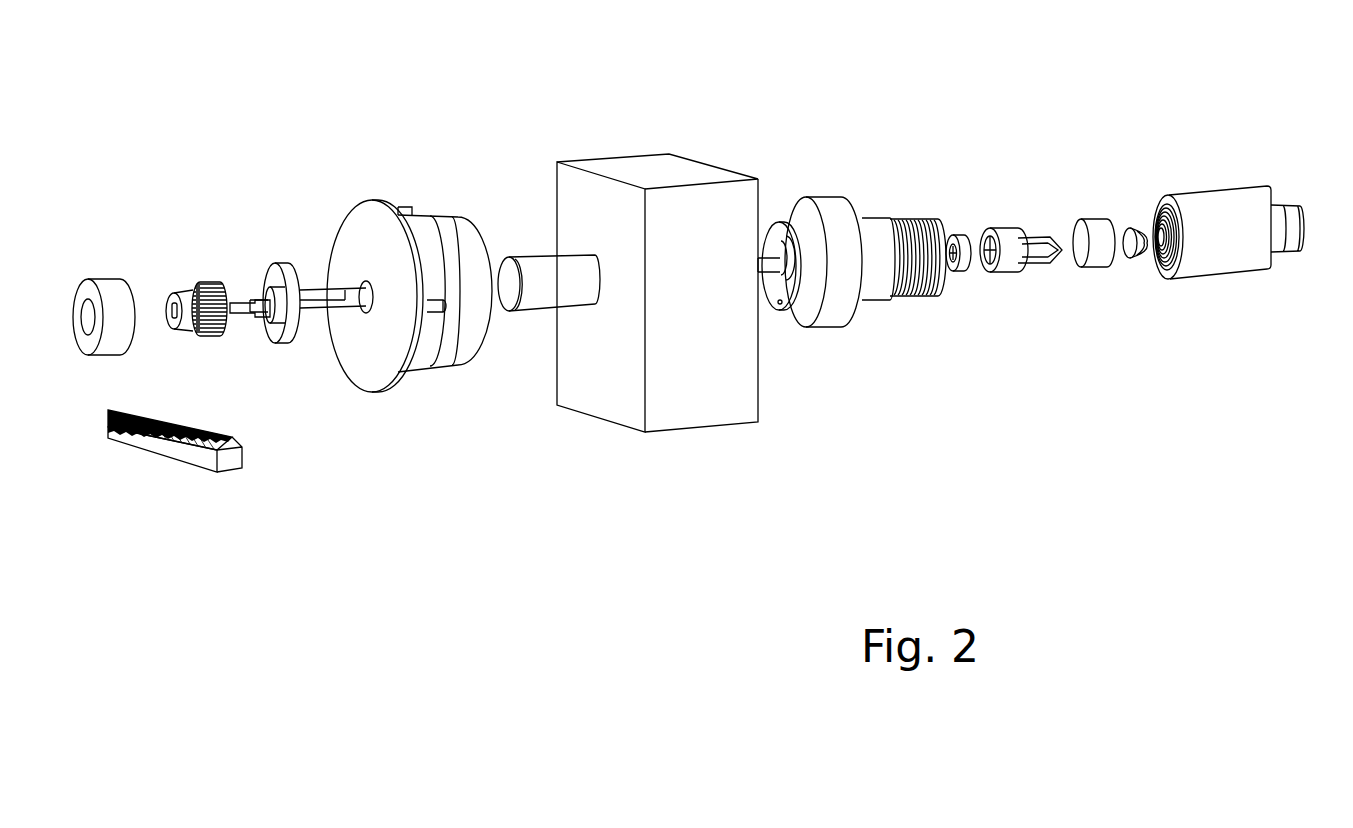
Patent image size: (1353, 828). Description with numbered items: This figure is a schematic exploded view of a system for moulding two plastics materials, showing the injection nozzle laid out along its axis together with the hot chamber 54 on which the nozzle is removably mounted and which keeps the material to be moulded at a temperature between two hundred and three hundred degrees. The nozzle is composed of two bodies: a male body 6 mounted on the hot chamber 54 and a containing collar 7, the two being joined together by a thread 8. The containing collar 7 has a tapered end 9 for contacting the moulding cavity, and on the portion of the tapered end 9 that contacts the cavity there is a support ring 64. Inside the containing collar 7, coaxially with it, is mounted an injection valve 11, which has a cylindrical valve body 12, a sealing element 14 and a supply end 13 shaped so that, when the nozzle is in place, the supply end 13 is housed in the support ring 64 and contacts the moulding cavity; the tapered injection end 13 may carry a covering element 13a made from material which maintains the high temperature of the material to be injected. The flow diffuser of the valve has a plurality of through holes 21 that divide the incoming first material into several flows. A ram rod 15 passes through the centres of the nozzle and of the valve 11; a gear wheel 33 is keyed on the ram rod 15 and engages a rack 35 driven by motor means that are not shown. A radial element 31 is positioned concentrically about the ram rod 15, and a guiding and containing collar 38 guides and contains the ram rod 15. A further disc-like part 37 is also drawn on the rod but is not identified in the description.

The male body 6 is at (868, 218).
The containing collar 7 is at (1243, 245).
The thread 8 is at (910, 297).
The tapered end 9 is at (1217, 208).
The injection valve 11 is at (1133, 268).
The cylindrical valve body 12 is at (1022, 228).
The supply end 13 is at (1057, 228).
The covering element 13a is at (1128, 223).
The sealing element 14 is at (1099, 217).
The ram rod 15 is at (765, 290).
The through holes 21 is at (950, 233).
The radial element 31 is at (430, 217).
The gear wheel 33 is at (212, 272).
The rack 35 is at (236, 438).
The drive wheel 37 is at (286, 262).
The guiding and containing collar 38 is at (532, 312).
The hot chamber 54 is at (634, 160).
The support ring 64 is at (1296, 200).